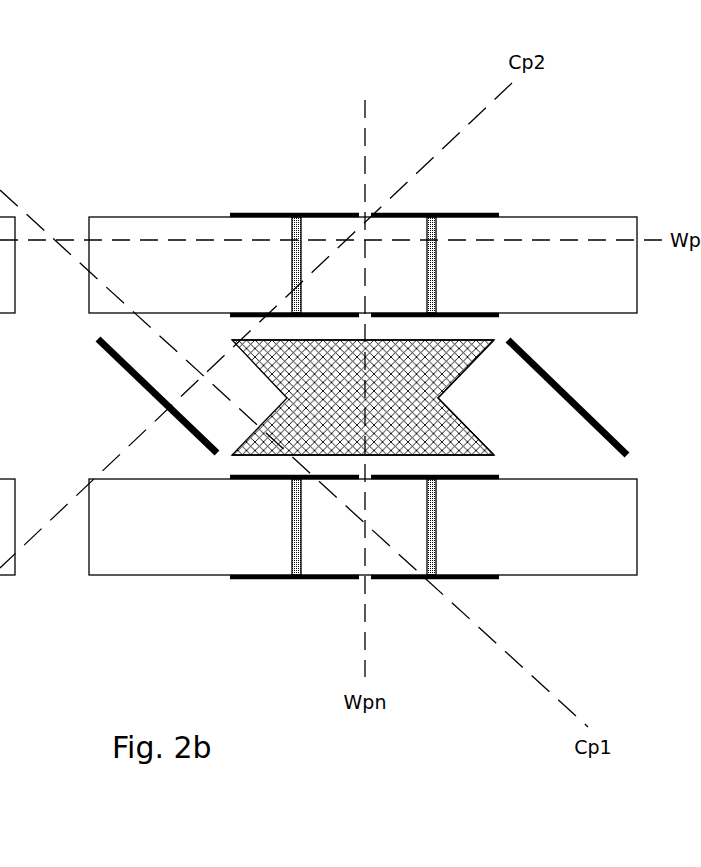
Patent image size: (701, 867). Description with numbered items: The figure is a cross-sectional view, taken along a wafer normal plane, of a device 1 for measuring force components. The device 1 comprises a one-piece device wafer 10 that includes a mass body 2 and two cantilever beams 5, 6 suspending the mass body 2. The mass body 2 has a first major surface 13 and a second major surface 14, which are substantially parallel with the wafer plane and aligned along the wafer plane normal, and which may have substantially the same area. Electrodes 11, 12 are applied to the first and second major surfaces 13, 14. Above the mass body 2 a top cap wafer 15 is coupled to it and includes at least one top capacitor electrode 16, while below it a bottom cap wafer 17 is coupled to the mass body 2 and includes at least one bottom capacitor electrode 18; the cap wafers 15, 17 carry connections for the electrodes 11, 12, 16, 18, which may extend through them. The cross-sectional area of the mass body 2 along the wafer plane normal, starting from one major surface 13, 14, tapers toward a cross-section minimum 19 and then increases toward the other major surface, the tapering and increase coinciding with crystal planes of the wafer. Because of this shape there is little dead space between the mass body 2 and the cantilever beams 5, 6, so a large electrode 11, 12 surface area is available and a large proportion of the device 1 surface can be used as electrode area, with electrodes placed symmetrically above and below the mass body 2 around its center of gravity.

The device for measuring force components 1 is at (225, 150).
The mass body 2 is at (440, 430).
The cantilever beam 5 is at (140, 384).
The cantilever beam 6 is at (562, 382).
The device wafer 10 is at (602, 390).
The electrode 11 is at (283, 317).
The electrode 12 is at (447, 476).
The first major surface 13 is at (405, 340).
The second major surface 14 is at (252, 457).
The top cap wafer 15 is at (145, 250).
The top capacitor electrode 16 is at (268, 213).
The bottom cap wafer 17 is at (176, 548).
The bottom capacitor electrode 18 is at (432, 577).
The cross-section minimum 19 is at (440, 398).